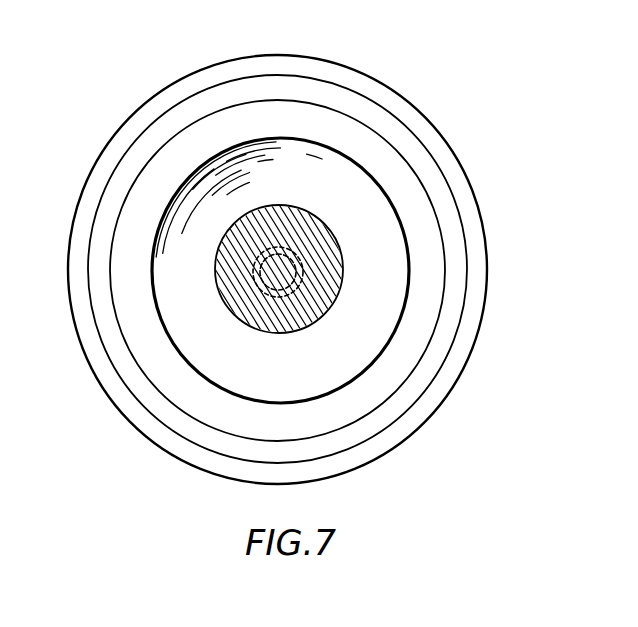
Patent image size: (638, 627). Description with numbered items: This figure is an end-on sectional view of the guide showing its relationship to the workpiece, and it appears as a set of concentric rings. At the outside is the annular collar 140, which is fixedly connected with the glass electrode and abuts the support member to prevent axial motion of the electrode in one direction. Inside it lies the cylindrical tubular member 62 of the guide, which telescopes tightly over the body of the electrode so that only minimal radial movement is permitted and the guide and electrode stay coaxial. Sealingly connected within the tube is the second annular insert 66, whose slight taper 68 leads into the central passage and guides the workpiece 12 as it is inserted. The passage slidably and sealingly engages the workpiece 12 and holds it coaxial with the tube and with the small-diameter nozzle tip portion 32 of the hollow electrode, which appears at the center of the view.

The annular collar 140 is at (430, 137).
The cylindrical tubular member 62 is at (443, 209).
The second annular insert 66 is at (446, 258).
The taper 68 is at (395, 302).
The workpiece 12 is at (330, 306).
The nozzle tip portion 32 is at (260, 283).